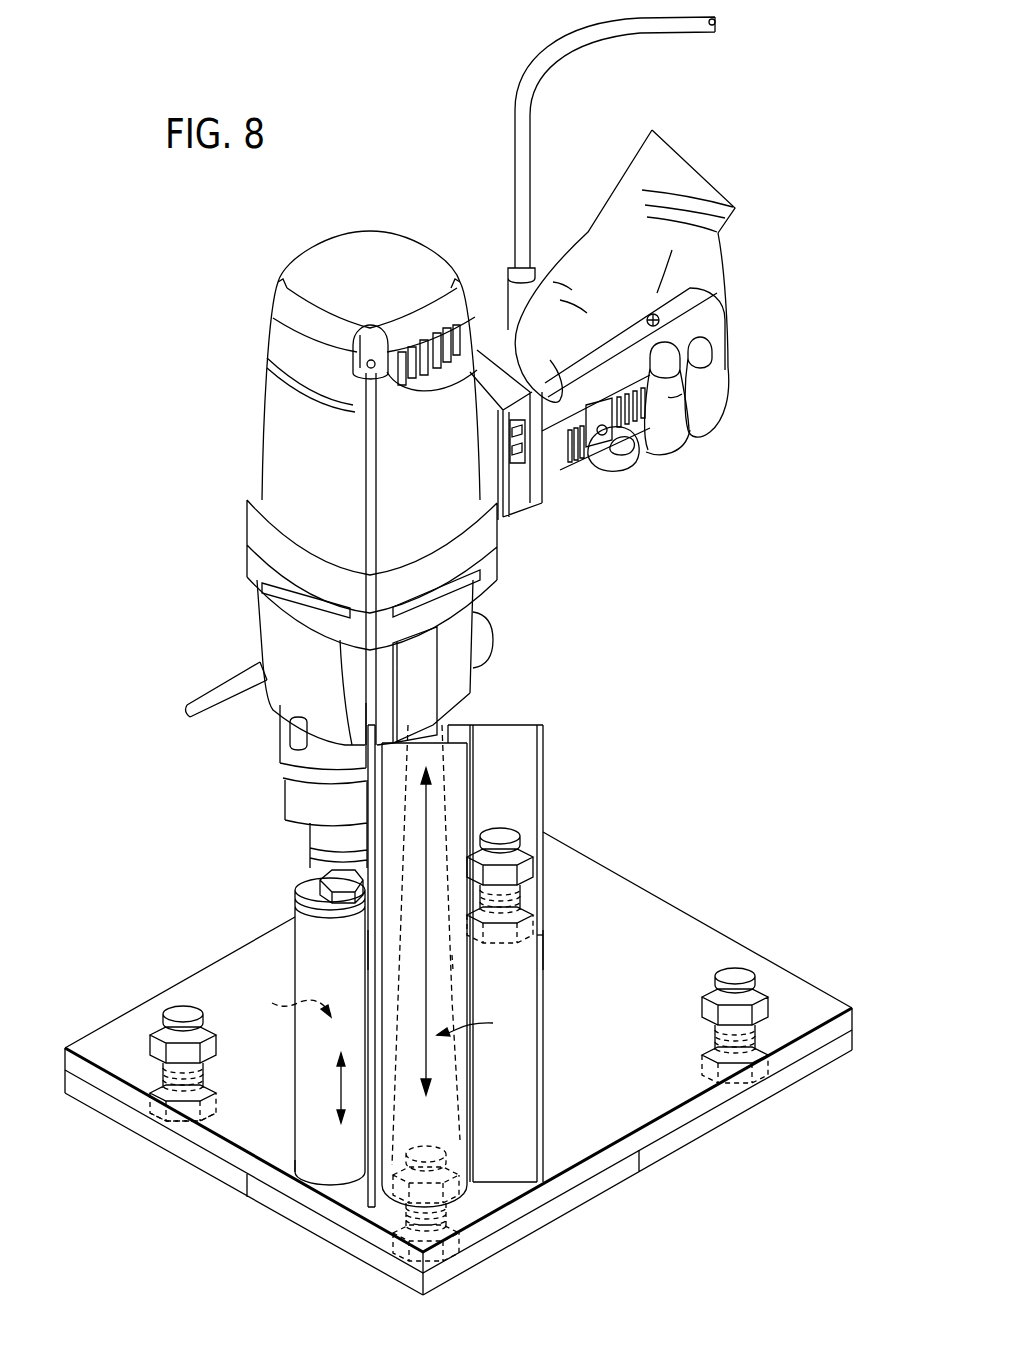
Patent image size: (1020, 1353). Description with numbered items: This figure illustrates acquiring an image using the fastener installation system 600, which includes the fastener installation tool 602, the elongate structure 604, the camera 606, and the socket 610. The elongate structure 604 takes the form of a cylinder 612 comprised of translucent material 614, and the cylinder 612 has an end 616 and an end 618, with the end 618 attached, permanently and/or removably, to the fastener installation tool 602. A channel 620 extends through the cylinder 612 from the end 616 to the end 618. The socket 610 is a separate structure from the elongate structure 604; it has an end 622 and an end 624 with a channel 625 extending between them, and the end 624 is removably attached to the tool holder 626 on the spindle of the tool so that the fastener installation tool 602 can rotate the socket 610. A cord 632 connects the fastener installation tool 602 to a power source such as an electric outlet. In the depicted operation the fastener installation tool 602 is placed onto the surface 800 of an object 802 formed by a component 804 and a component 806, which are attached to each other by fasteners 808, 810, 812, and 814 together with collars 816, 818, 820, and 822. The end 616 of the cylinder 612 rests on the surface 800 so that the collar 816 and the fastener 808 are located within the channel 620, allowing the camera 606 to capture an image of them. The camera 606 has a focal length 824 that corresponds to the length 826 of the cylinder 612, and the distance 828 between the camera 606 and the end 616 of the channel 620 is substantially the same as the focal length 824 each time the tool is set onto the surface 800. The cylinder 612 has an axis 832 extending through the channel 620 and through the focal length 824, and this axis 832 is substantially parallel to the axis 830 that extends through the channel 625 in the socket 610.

The fastener installation system 600 is at (407, 212).
The fastener installation tool 602 is at (333, 255).
The elongate structure 604 is at (473, 1088).
The camera 606 is at (444, 737).
The socket 610 is at (305, 1190).
The cylinder 612 is at (473, 1060).
The translucent material 614 is at (473, 1117).
The end 616 is at (378, 1213).
The end 618 is at (468, 699).
The channel 620 is at (486, 1025).
The end 622 is at (338, 1183).
The end 624 is at (303, 885).
The channel 625 is at (290, 995).
The tool holder 626 is at (312, 872).
The cord 632 is at (514, 131).
The surface 800 is at (650, 923).
The object 802 is at (717, 928).
The component 804 is at (92, 1042).
The component 806 is at (122, 1112).
The fastener 808 is at (458, 1247).
The fastener 810 is at (203, 1142).
The fastener 812 is at (543, 937).
The fastener 814 is at (700, 1053).
The collar 816 is at (478, 1168).
The collar 818 is at (150, 1030).
The collar 820 is at (535, 829).
The collar 822 is at (703, 1000).
The focal length 824 is at (452, 962).
The length 826 is at (362, 953).
The distance 828 is at (548, 953).
The axis 830 is at (342, 1088).
The axis 832 is at (427, 980).